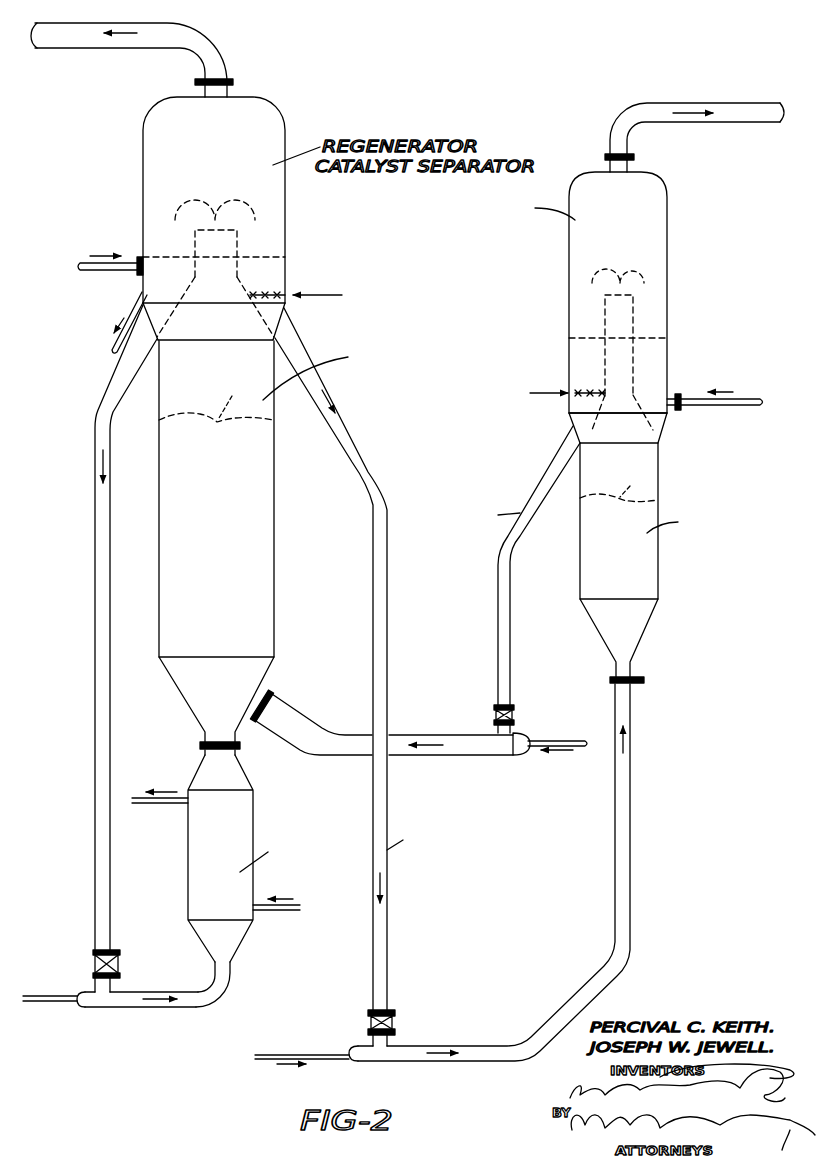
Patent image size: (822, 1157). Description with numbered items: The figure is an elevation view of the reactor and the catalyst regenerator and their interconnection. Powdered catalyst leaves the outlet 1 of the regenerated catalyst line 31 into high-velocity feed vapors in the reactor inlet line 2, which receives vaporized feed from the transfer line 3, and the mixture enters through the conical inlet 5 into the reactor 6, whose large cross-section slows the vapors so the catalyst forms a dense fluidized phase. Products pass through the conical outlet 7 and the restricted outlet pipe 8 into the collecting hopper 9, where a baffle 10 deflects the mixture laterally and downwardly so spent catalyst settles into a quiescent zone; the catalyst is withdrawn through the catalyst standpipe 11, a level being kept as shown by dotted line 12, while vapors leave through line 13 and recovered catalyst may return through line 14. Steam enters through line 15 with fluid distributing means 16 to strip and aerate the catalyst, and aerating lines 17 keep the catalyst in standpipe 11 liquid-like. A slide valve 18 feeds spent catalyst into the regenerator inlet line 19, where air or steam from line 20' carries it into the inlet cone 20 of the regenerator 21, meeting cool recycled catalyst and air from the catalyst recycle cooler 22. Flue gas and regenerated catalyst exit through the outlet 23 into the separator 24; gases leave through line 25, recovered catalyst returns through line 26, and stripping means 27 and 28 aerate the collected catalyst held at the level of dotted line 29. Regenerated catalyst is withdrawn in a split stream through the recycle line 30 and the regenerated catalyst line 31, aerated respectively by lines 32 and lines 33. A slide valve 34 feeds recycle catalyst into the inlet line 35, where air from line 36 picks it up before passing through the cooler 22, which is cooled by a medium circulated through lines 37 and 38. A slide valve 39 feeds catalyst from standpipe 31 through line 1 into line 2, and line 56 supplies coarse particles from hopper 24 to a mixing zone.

The outlet of catalyst standpipe 1 is at (392, 1041).
The reactor inlet line 2 is at (473, 1060).
The transfer line 3 is at (322, 1057).
The conical inlet 5 is at (640, 631).
The reactor 6 is at (658, 493).
The conical outlet 7 is at (640, 403).
The outlet pipe 8 is at (633, 315).
The collecting hopper 9 is at (667, 235).
The baffle 10 is at (640, 272).
The catalyst standpipe 11 is at (565, 442).
The dotted line indicating catalyst level 12 is at (587, 337).
The vapor outlet line 13 is at (652, 108).
The catalyst return line 14 is at (718, 407).
The stripping medium line 15 is at (533, 392).
The fluid distributing means 16 is at (585, 388).
The aerating medium lines 17 is at (536, 479).
The slide valve 18 is at (512, 712).
The regenerator inlet line 19 is at (462, 738).
The inlet cone 20 is at (236, 706).
The carrying medium line 20' is at (562, 752).
The regenerator 21 is at (273, 586).
The catalyst recycle cooler 22 is at (247, 801).
The regenerator outlet 23 is at (243, 291).
The regenerated catalyst separator 24 is at (279, 196).
The flue gas line 25 is at (212, 35).
The catalyst return line 26 is at (110, 272).
The stripping medium line 27 is at (342, 295).
The distributor 28 is at (283, 310).
The dotted line indicating catalyst level 29 is at (267, 255).
The regenerated catalyst recycle line 30 is at (103, 501).
The regenerated catalyst line 31 is at (348, 429).
The aerating medium lines 32 is at (94, 430).
The aerating medium lines 33 is at (351, 461).
The slide valve 34 is at (120, 962).
The cooler inlet line 35 is at (188, 1008).
The air line 36 is at (37, 1003).
The cooling medium line 37 is at (283, 913).
The cooling medium line 38 is at (168, 804).
The slide valve 39 is at (390, 1022).
The coarse particle supply line 56 is at (133, 316).